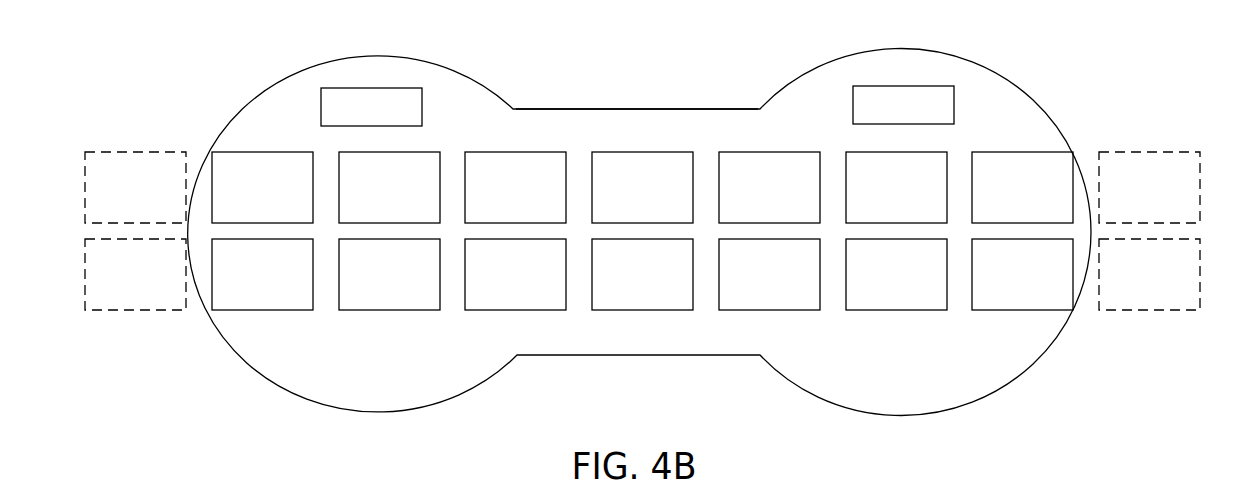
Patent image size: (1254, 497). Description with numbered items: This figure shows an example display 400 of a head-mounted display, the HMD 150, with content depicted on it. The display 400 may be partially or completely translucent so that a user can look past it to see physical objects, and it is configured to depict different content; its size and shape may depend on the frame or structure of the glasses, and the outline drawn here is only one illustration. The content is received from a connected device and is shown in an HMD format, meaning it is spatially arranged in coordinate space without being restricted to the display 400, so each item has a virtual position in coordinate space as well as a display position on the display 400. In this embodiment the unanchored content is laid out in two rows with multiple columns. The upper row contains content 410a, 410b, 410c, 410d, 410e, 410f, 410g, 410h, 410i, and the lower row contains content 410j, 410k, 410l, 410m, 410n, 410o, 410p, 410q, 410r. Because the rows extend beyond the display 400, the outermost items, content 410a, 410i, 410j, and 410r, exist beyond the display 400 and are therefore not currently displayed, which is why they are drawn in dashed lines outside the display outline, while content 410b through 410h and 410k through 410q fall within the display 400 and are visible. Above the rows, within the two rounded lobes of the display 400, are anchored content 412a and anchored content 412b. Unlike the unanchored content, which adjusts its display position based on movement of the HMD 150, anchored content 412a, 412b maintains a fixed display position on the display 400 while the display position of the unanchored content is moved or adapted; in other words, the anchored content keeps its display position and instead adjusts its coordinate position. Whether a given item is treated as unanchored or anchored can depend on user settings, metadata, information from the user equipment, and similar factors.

The display 400 is at (1007, 366).
The HMD 150 is at (759, 107).
The anchored content 412a is at (371, 107).
The anchored content 412b is at (903, 105).
The content 410a is at (135, 187).
The content 410b is at (262, 187).
The content 410c is at (389, 187).
The content 410d is at (515, 187).
The content 410e is at (642, 187).
The content 410f is at (769, 187).
The content 410g is at (896, 187).
The content 410h is at (1022, 187).
The content 410i is at (1149, 187).
The content 410j is at (135, 274).
The content 410k is at (262, 274).
The content 410l is at (389, 274).
The content 410m is at (515, 274).
The content 410n is at (642, 274).
The content 410o is at (769, 274).
The content 410p is at (896, 274).
The content 410q is at (1022, 274).
The content 410r is at (1149, 274).